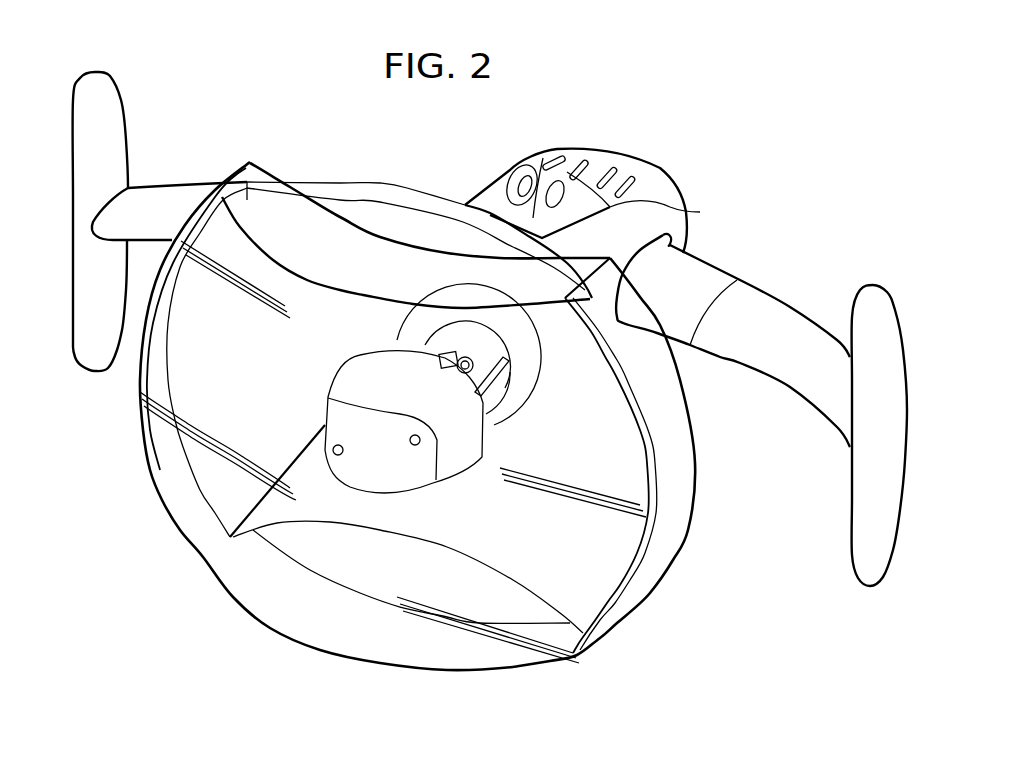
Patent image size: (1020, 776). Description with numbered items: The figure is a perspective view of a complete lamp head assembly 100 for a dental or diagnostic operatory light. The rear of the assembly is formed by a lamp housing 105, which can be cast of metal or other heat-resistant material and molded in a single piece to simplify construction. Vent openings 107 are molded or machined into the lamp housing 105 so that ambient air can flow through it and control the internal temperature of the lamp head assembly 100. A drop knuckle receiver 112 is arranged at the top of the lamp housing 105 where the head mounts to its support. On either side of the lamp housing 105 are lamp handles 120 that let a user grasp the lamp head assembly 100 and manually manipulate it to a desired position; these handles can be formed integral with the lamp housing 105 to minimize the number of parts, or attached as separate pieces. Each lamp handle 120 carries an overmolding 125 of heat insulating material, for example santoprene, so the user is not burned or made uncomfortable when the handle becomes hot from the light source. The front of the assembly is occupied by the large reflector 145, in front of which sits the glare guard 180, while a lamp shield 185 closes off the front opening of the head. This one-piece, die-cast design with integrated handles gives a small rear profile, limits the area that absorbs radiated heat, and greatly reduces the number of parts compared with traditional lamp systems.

The lamp head assembly 100 is at (127, 530).
The lamp housing 105 is at (683, 183).
The vent openings 107 is at (742, 223).
The drop knuckle receiver 112 is at (570, 160).
The lamp handles 120 is at (107, 138).
The overmolding 125 is at (163, 188).
The reflector 145 is at (187, 453).
The glare guard 180 is at (230, 538).
The lamp shield 185 is at (233, 597).